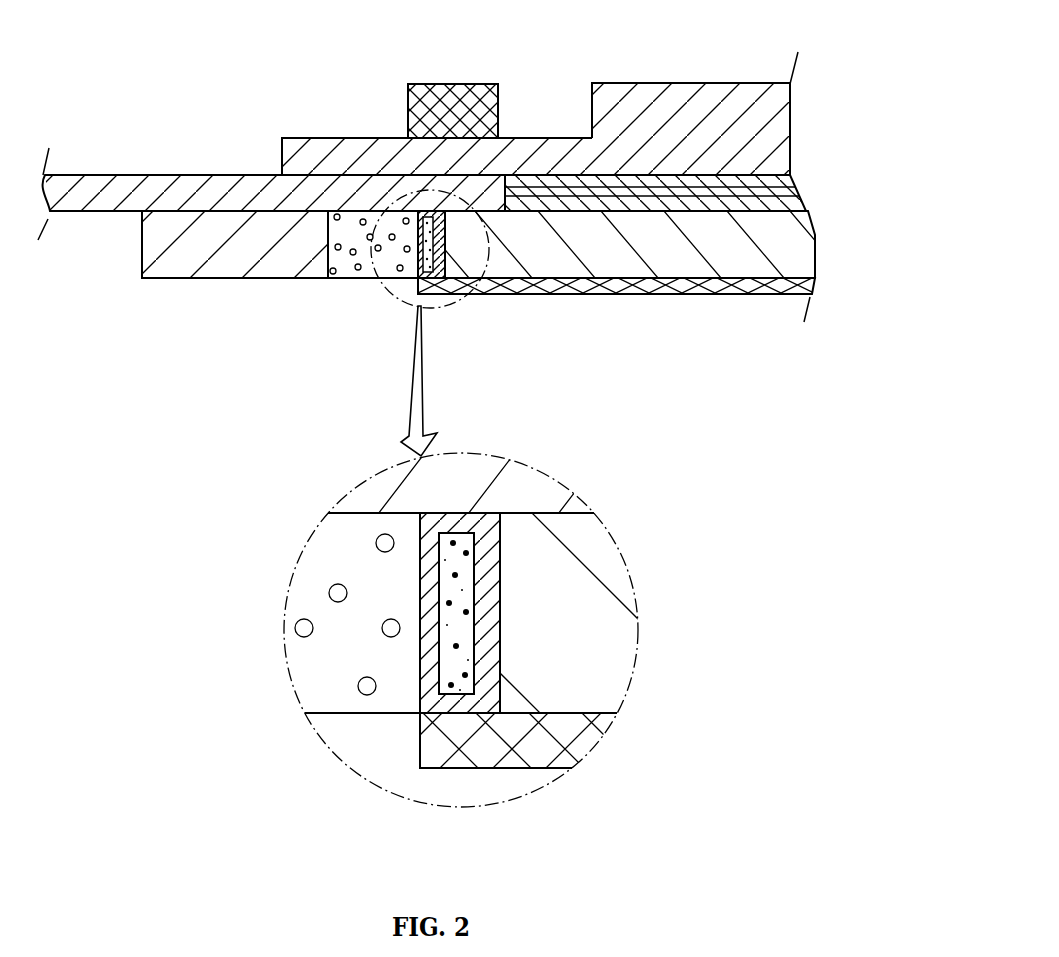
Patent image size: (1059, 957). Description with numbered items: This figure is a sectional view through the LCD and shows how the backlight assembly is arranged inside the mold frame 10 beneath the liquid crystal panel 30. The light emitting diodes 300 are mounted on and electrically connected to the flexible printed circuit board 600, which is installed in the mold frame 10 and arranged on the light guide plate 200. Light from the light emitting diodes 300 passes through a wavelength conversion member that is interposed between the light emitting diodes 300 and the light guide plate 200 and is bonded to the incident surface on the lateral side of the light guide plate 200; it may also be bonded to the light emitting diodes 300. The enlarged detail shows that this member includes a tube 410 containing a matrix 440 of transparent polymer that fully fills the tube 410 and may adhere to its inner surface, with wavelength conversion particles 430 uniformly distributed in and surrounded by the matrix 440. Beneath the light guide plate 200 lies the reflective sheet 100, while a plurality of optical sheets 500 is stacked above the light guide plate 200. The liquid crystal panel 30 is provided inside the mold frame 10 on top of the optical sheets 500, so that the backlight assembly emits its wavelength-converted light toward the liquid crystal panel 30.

The mold frame 10 is at (192, 258).
The liquid crystal panel 30 is at (688, 100).
The reflective sheet 100 is at (522, 285).
The light guide plate 200 is at (608, 255).
The light emitting diodes 300 is at (350, 265).
The tube 410 is at (485, 628).
The wavelength conversion particles 430 is at (467, 553).
The matrix 440 is at (452, 585).
The optical sheets 500 is at (693, 193).
The flexible printed circuit board 600 is at (193, 188).